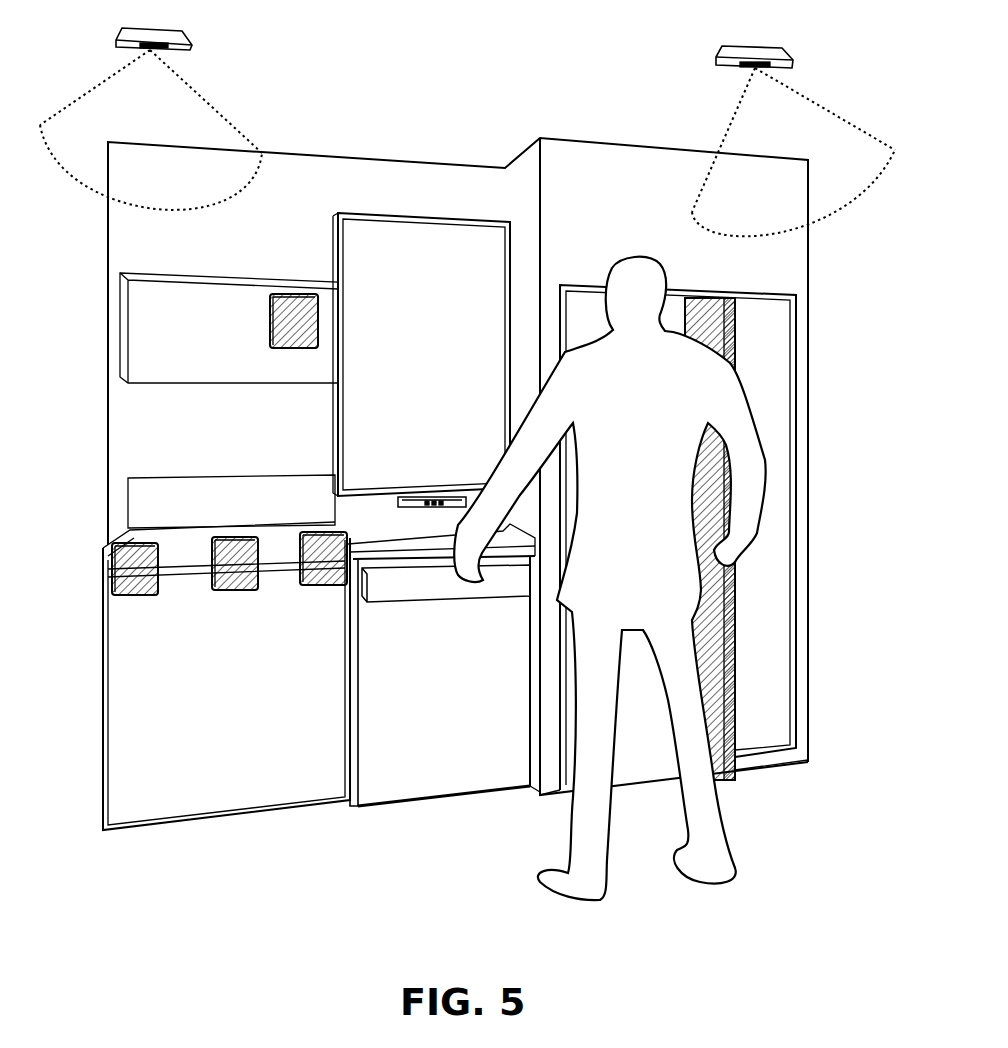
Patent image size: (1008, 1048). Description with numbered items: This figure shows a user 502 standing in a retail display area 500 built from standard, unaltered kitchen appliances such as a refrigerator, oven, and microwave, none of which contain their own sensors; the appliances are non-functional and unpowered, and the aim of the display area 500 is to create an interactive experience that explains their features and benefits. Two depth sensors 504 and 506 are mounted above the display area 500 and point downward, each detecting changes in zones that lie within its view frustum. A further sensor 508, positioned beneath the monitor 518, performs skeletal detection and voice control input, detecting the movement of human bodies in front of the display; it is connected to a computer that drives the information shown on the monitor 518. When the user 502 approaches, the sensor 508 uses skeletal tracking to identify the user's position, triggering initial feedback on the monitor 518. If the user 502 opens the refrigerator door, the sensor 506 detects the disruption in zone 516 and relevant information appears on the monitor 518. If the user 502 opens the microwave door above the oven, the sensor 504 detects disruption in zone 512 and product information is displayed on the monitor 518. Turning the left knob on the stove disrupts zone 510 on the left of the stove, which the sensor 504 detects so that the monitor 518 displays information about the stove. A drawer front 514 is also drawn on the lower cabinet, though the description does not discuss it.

The retail display area 500 is at (346, 826).
The user 502 is at (622, 250).
The depth sensor 504 is at (193, 48).
The depth sensor 506 is at (793, 66).
The sensor 508 is at (420, 497).
The zone 510 is at (323, 596).
The zone 512 is at (300, 293).
The drawer / dispenser 514 is at (432, 603).
The zone 516 is at (735, 322).
The monitor 518 is at (421, 354).